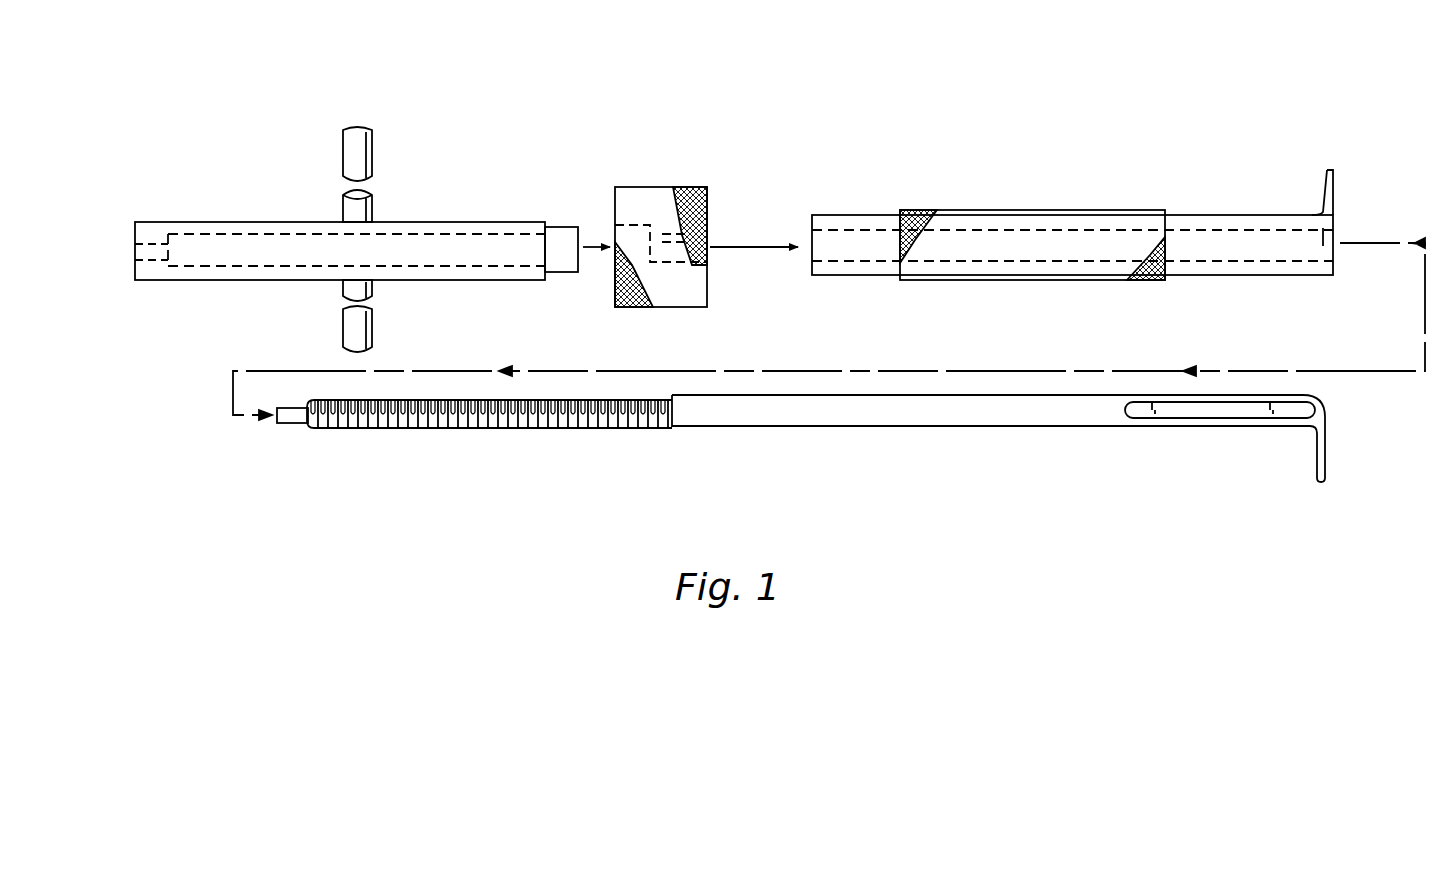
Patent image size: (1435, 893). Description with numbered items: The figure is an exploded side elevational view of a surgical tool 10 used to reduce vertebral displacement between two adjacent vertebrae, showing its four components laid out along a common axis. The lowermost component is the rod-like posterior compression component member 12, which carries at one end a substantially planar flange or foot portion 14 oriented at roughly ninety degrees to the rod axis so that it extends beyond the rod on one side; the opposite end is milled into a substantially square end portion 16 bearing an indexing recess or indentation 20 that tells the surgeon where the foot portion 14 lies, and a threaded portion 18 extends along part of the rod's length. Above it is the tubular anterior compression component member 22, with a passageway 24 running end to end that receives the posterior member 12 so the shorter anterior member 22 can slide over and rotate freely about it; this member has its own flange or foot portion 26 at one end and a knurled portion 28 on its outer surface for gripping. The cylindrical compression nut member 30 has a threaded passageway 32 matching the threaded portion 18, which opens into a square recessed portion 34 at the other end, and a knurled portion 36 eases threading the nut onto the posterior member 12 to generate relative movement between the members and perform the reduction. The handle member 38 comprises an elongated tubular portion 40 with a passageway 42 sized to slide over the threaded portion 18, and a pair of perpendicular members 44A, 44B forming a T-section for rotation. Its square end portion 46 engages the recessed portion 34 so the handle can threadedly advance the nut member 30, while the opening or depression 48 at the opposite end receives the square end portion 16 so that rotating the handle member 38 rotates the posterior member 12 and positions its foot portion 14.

The surgical tool 10 is at (998, 152).
The posterior compression component member 12 is at (821, 449).
The flange or foot portion 14 is at (1325, 453).
The square end portion 16 is at (299, 426).
The threaded portion 18 is at (457, 421).
The recess or indentation 20 is at (288, 414).
The anterior compression component member 22 is at (1086, 206).
The passageway 24 is at (835, 228).
The flange or foot portion 26 is at (1336, 182).
The knurled portion 28 is at (1150, 268).
The cylindrical compression nut member 30 is at (662, 220).
The threaded passageway 32 is at (677, 263).
The square recessed portion 34 is at (628, 226).
The knurled portion 36 is at (704, 188).
The handle member 38 is at (356, 220).
The elongated tubular portion 40 is at (265, 221).
The passageway 42 is at (452, 232).
The handle T-section member 44A is at (372, 145).
The handle T-section member 44B is at (372, 333).
The handle end portion 46 is at (563, 273).
The opening or depression 48 is at (156, 262).